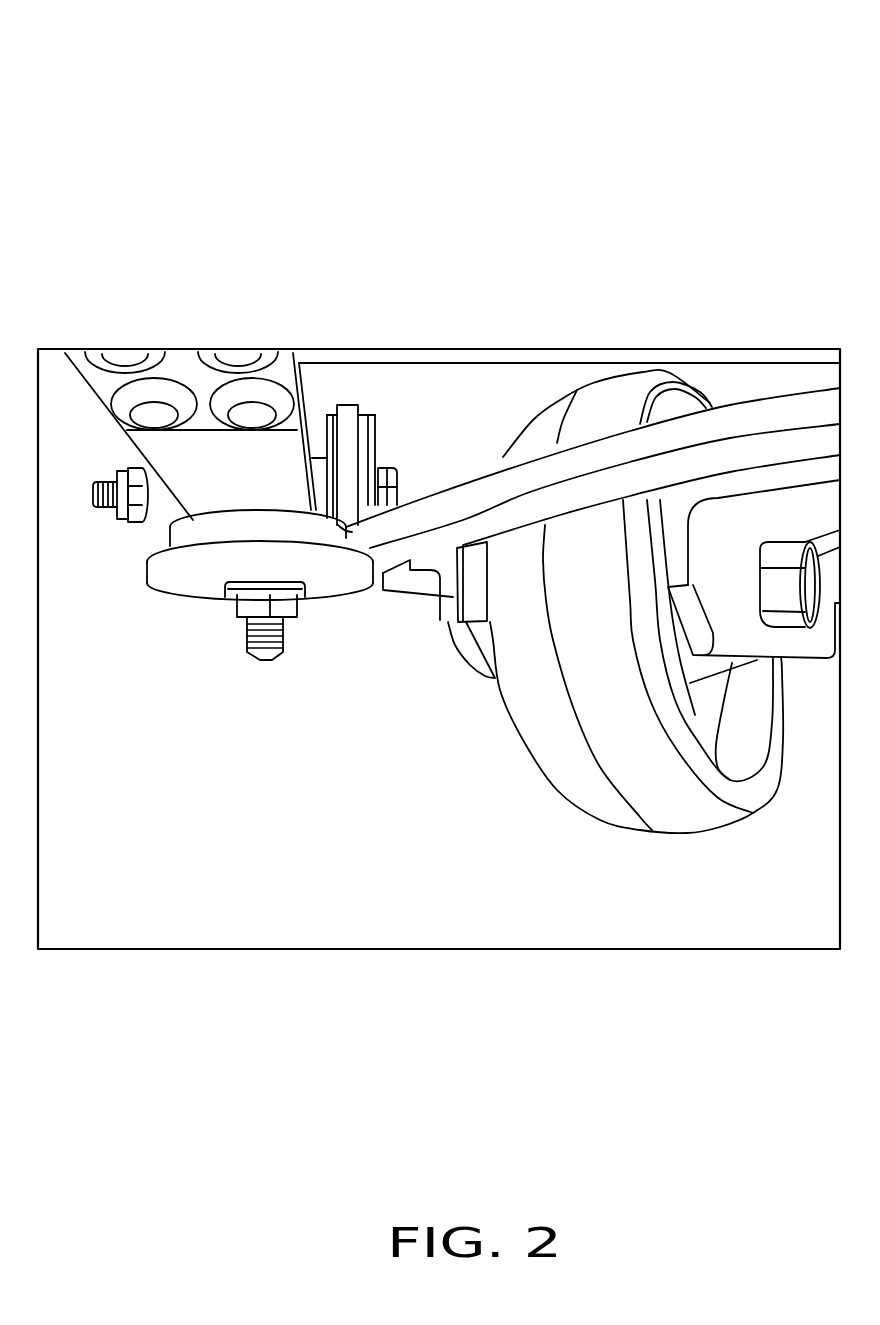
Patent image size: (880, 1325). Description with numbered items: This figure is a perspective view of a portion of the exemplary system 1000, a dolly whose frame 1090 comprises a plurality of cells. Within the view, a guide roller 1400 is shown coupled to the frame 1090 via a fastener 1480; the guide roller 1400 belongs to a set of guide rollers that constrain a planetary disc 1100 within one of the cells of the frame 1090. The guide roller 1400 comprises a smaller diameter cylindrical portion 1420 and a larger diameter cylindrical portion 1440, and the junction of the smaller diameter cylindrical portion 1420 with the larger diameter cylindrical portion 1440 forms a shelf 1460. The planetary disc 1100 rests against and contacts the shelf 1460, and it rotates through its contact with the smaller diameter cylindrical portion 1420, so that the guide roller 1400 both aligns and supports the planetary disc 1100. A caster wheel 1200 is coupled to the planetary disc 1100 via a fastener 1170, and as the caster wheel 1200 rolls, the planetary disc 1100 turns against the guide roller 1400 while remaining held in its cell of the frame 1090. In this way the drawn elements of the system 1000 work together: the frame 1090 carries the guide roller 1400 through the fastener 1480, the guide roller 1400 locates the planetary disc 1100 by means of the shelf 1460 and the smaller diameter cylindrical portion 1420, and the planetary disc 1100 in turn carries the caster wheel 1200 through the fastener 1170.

The system 1000 is at (77, 22).
The frame 1090 is at (197, 372).
The shelf 1460 is at (335, 520).
The smaller diameter cylindrical portion 1420 is at (187, 532).
The larger diameter cylindrical portion 1440 is at (160, 568).
The guide roller 1400 is at (219, 583).
The fastener 1480 is at (263, 660).
The planetary disc 1100 is at (437, 502).
The fastener 1170 is at (783, 593).
The caster wheel 1200 is at (613, 737).